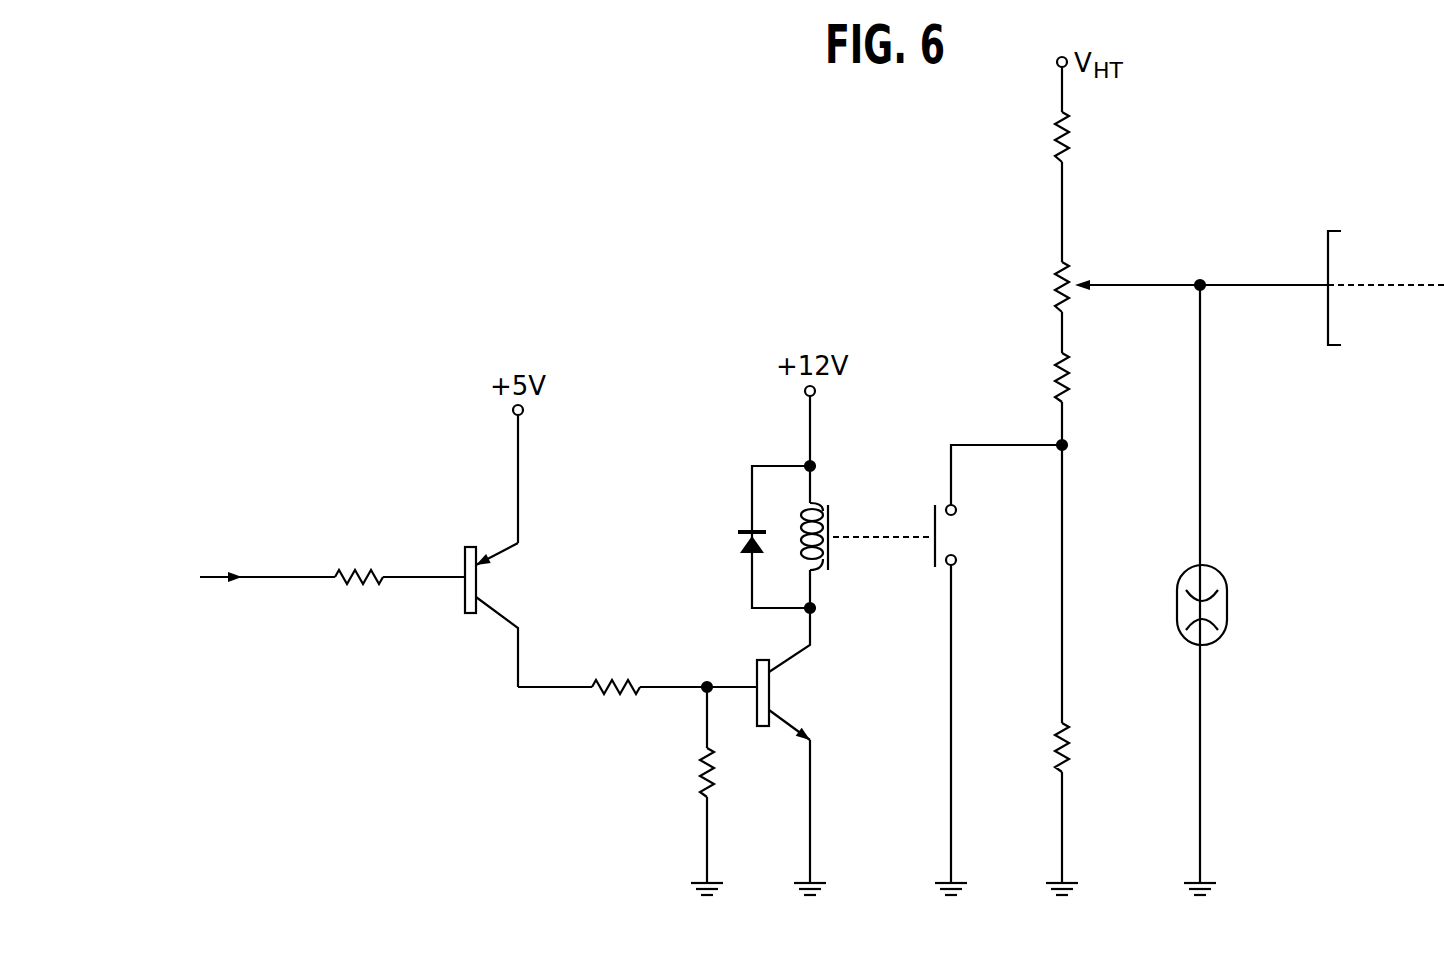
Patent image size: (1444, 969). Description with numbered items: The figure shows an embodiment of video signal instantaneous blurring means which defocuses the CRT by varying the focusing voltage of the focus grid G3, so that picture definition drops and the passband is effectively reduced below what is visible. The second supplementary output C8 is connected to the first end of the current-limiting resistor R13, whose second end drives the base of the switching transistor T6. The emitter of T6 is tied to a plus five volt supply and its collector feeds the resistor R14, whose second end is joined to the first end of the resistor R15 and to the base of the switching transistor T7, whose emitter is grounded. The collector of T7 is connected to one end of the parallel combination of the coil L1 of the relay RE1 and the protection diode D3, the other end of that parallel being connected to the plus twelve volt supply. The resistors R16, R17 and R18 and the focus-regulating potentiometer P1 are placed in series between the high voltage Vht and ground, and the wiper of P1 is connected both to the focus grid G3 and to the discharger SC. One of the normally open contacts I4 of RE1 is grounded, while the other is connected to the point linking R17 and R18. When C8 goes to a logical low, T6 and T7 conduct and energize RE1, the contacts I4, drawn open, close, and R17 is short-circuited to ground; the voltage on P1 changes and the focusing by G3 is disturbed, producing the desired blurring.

The second supplementary output C8 is at (202, 579).
The current-limiting resistor R13 is at (352, 559).
The switching transistor T6 is at (493, 615).
The current-limiting resistor R14 is at (637, 669).
The switching transistor T7 is at (791, 751).
The current-limiting resistor R15 is at (731, 791).
The protection diode D3 is at (757, 537).
The coil of the relay L1 is at (799, 537).
The relay RE1 is at (885, 541).
The normally open contacts I4 is at (998, 670).
The current-limiting resistor R16 is at (1092, 187).
The focus-regulating potentiometer P1 is at (1106, 307).
The current-limiting resistor R17 is at (1092, 538).
The current-limiting resistor R18 is at (1087, 809).
The discharger SC is at (1276, 598).
The focus grid G3 is at (1322, 308).